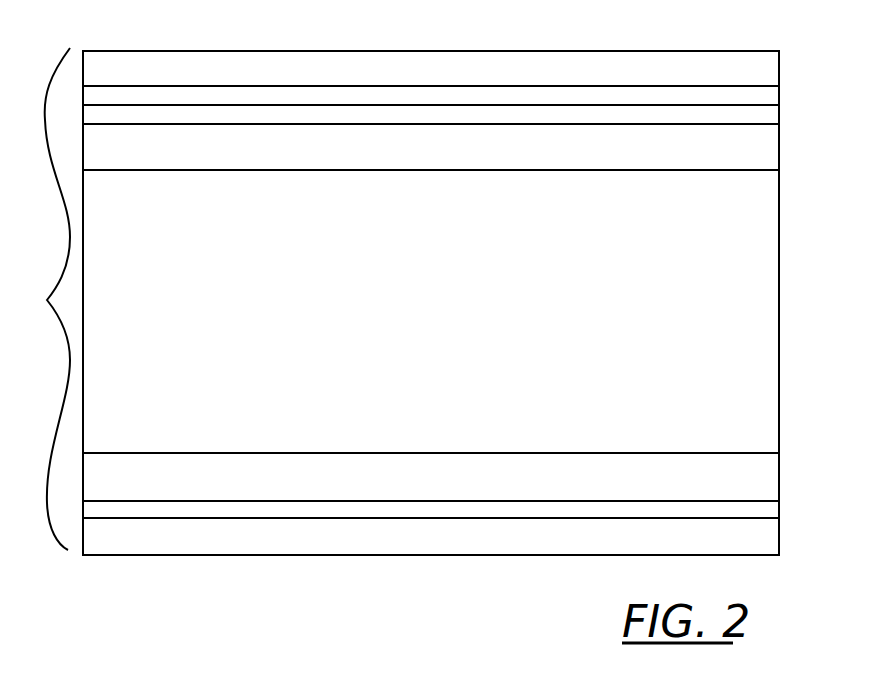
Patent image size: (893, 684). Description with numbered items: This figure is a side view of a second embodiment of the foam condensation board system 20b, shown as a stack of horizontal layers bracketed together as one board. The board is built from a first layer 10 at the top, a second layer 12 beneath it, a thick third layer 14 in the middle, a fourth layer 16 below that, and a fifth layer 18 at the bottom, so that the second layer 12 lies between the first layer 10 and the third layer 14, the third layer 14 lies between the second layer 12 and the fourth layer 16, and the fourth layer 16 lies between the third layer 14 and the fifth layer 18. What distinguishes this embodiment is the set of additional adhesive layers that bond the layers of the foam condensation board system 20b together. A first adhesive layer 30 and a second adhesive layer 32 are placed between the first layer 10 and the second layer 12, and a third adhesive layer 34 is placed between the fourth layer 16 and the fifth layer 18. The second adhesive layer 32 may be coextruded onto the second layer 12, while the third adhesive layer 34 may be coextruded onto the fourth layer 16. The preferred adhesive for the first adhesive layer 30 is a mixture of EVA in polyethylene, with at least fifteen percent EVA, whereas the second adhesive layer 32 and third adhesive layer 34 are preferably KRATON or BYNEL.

The first layer 10 is at (779, 54).
The first adhesive layer 30 is at (779, 90).
The second adhesive layer 32 is at (779, 117).
The second layer 12 is at (779, 150).
The third layer 14 is at (779, 268).
The fourth layer 16 is at (779, 470).
The third adhesive layer 34 is at (779, 506).
The fifth layer 18 is at (779, 538).
The foam condensation board system 20b is at (39, 299).